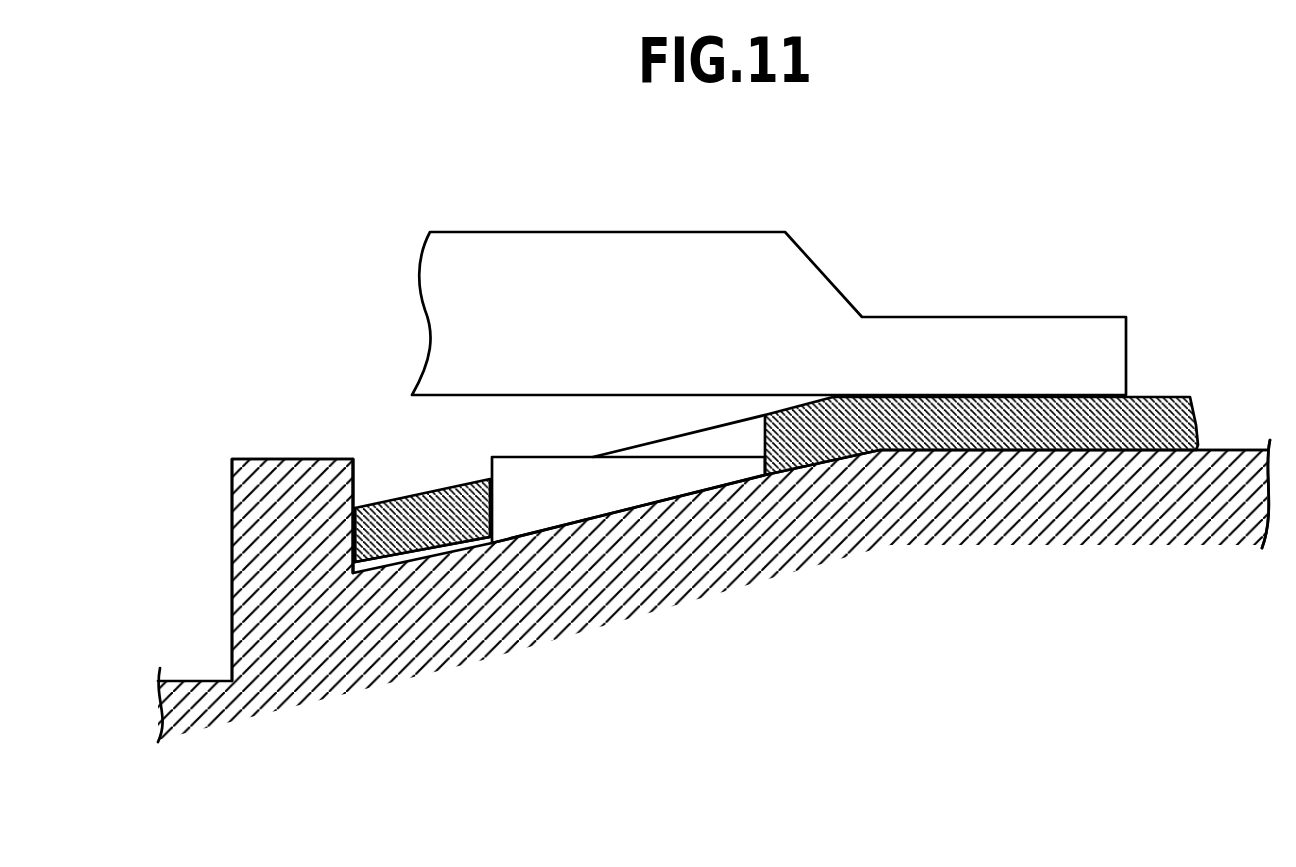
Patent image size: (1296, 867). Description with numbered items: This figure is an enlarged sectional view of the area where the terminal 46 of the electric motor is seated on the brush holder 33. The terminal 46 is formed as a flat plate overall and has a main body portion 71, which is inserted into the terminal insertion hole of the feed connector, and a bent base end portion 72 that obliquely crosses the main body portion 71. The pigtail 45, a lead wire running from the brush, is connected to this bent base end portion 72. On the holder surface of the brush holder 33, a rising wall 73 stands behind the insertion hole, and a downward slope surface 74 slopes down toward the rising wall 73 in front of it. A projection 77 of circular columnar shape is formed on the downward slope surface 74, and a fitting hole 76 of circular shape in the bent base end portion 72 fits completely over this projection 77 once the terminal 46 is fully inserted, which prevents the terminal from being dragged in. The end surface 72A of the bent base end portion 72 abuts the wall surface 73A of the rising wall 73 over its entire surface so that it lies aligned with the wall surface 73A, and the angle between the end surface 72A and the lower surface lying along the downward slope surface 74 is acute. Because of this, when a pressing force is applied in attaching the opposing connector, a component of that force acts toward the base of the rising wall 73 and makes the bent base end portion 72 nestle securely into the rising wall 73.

The brush holder 33 is at (263, 662).
The pigtail 45 is at (585, 268).
The terminal 46 is at (1013, 386).
The main body portion 71 is at (1170, 405).
The bent base end portion 72 is at (427, 487).
The end surface 72A is at (353, 535).
The rising wall 73 is at (256, 493).
The wall surface 73A is at (368, 487).
The downward slope surface 74 is at (434, 533).
The fitting hole 76 is at (762, 432).
The projection 77 is at (535, 457).